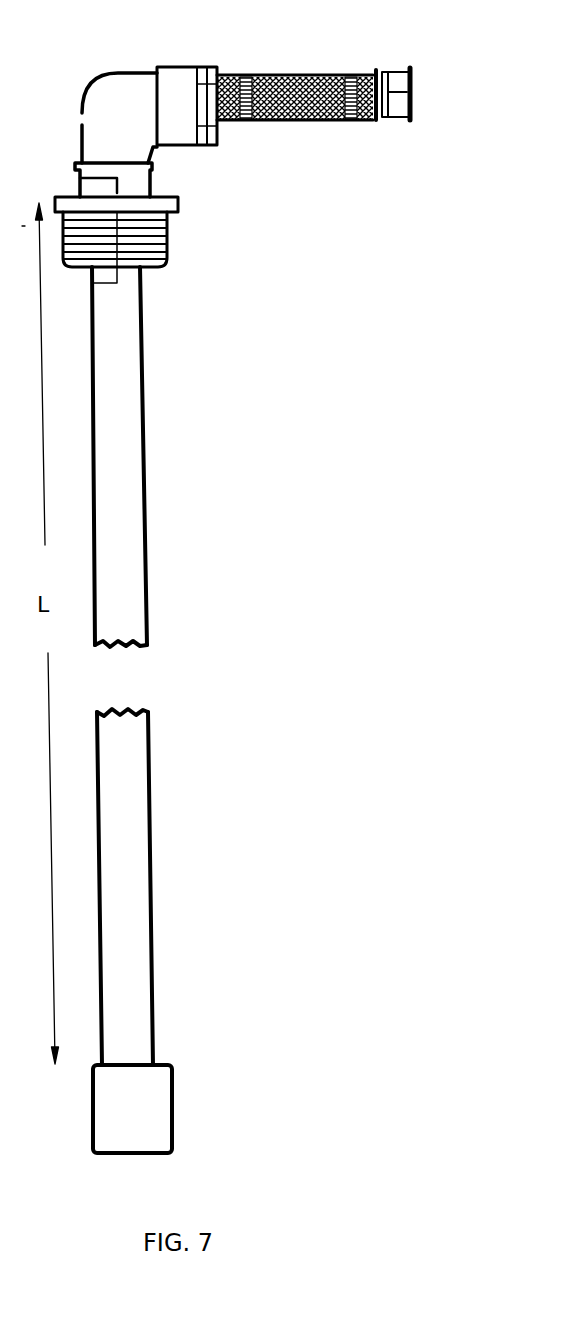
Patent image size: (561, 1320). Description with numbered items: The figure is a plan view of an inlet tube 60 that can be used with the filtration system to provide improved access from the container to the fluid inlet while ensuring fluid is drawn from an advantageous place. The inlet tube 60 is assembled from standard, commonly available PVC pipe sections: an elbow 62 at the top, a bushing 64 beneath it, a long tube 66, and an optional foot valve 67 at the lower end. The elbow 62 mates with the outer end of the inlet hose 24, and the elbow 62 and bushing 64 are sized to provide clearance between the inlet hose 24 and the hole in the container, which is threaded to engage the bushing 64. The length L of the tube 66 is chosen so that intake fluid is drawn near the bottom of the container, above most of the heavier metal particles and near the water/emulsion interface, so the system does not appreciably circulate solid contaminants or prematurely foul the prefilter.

The inlet tube 60 is at (336, 337).
The elbow 62 is at (123, 103).
The inlet hose 24 is at (299, 122).
The bushing 64 is at (167, 243).
The tube 66 is at (125, 772).
The foot valve 67 is at (152, 1098).